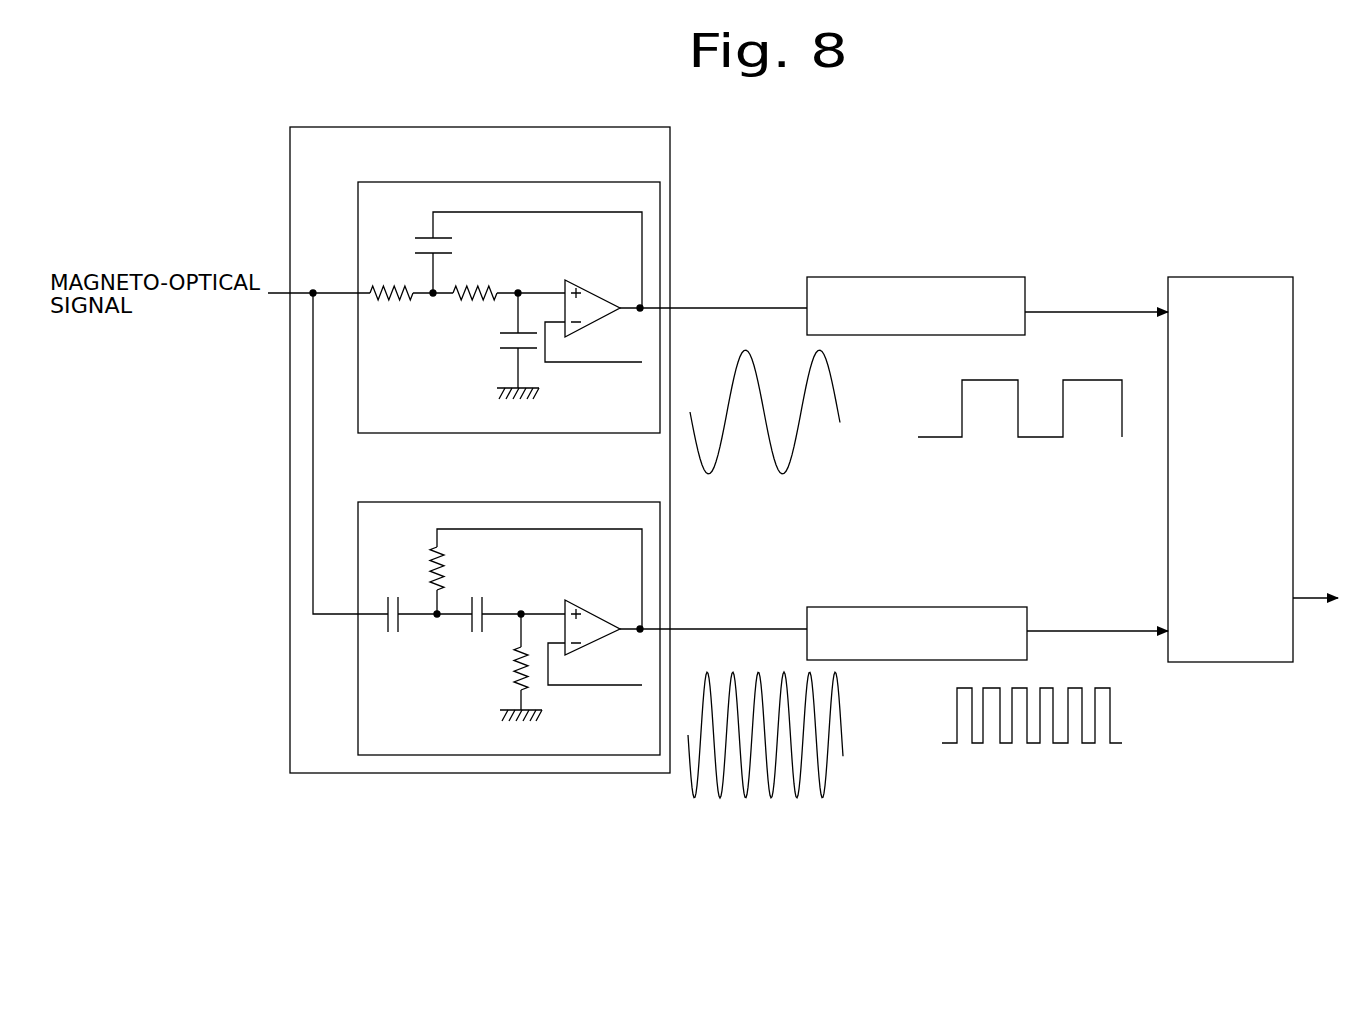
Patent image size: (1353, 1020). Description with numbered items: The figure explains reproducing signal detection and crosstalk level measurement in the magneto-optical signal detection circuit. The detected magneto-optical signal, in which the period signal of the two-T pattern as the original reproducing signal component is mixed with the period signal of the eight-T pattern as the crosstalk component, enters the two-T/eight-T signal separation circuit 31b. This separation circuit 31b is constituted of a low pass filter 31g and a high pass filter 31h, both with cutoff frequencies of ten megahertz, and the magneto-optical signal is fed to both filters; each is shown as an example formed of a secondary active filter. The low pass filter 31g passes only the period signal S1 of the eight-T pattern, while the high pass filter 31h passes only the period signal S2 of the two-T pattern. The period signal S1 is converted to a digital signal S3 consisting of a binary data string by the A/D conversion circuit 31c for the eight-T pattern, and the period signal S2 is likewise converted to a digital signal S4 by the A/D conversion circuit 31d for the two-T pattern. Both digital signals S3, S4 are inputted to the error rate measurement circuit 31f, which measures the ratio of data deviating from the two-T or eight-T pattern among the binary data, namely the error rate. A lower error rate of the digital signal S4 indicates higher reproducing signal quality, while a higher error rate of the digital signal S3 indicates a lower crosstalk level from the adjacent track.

The 2T/8T signal separation circuit 31b is at (650, 127).
The A/D conversion circuit for the 8T pattern 31c is at (917, 277).
The A/D conversion circuit for the 2T pattern 31d is at (942, 607).
The error rate measurement circuit 31f is at (1227, 277).
The low pass filter 31g is at (565, 433).
The high pass filter 31h is at (565, 757).
The period signal of the 8T pattern S1 is at (795, 465).
The period signal of the 2T pattern S2 is at (827, 787).
The digital signal S3 is at (953, 438).
The digital signal S4 is at (978, 743).